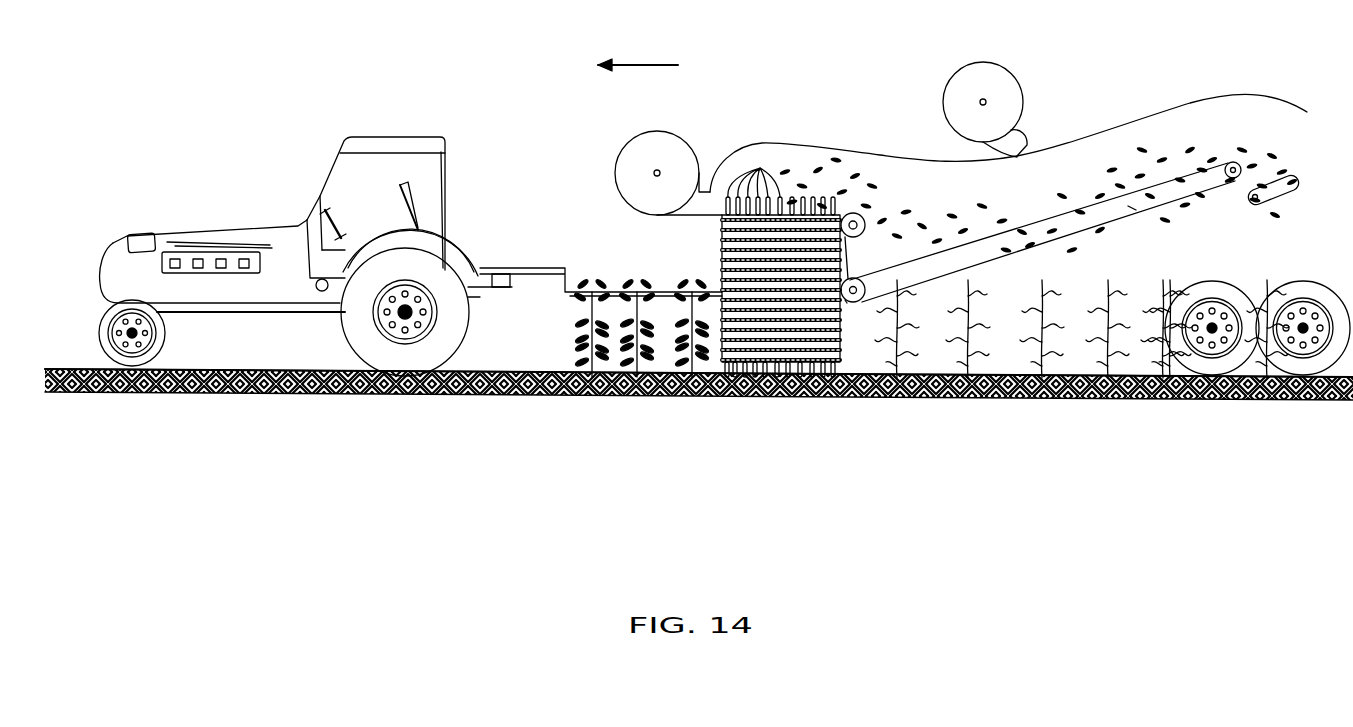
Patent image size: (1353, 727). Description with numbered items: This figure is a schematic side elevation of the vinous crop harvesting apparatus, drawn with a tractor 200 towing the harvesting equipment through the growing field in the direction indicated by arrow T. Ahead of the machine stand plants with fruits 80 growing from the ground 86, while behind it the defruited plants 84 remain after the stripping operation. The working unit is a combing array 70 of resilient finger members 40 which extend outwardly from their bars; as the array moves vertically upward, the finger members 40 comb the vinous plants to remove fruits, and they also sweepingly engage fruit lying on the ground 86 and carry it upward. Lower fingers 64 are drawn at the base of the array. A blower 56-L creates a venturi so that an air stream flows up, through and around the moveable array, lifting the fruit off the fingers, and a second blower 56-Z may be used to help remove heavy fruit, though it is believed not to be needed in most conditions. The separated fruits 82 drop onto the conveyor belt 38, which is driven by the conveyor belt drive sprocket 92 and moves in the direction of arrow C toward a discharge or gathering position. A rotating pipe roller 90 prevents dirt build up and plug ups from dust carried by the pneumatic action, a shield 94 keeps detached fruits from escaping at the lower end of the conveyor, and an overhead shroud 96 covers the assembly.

The tractor 200 is at (372, 125).
The direction of travel arrow T is at (638, 77).
The blower 56-L is at (672, 150).
The overhead shroud 96 is at (836, 152).
The blower 56-Z is at (1013, 98).
The separated fruits 82 is at (1233, 138).
The conveyor belt 38 is at (1053, 208).
The conveyor belt direction arrow C is at (1128, 208).
The rotating pipe roller 90 is at (863, 238).
The conveyor belt drive sprocket 92 is at (864, 294).
The shield 94 is at (847, 303).
The lower tines 64 is at (840, 332).
The combing array 70 is at (778, 400).
The resilient finger members 40 is at (760, 168).
The plants with fruits 80 is at (641, 290).
The defruited plants 84 is at (1117, 290).
The ground 86 is at (652, 405).